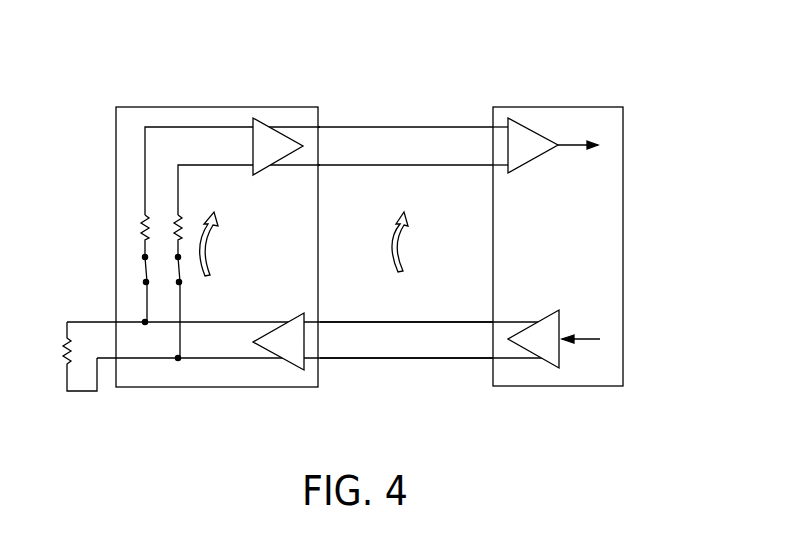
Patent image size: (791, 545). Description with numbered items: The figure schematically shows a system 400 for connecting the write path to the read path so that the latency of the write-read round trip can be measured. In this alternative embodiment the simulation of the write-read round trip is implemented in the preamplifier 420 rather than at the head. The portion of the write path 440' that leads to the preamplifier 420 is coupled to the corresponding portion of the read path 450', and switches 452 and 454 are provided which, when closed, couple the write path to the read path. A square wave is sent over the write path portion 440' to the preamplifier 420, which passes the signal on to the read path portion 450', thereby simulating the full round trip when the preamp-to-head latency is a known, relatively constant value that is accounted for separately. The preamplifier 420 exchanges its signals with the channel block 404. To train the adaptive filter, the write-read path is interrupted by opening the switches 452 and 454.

The system 400 is at (677, 445).
The channel 404 is at (575, 387).
The preamplifier 420 is at (151, 389).
The write path portion 440' is at (385, 379).
The read path portion 450' is at (385, 161).
The switch 452 is at (181, 262).
The switch 454 is at (143, 237).